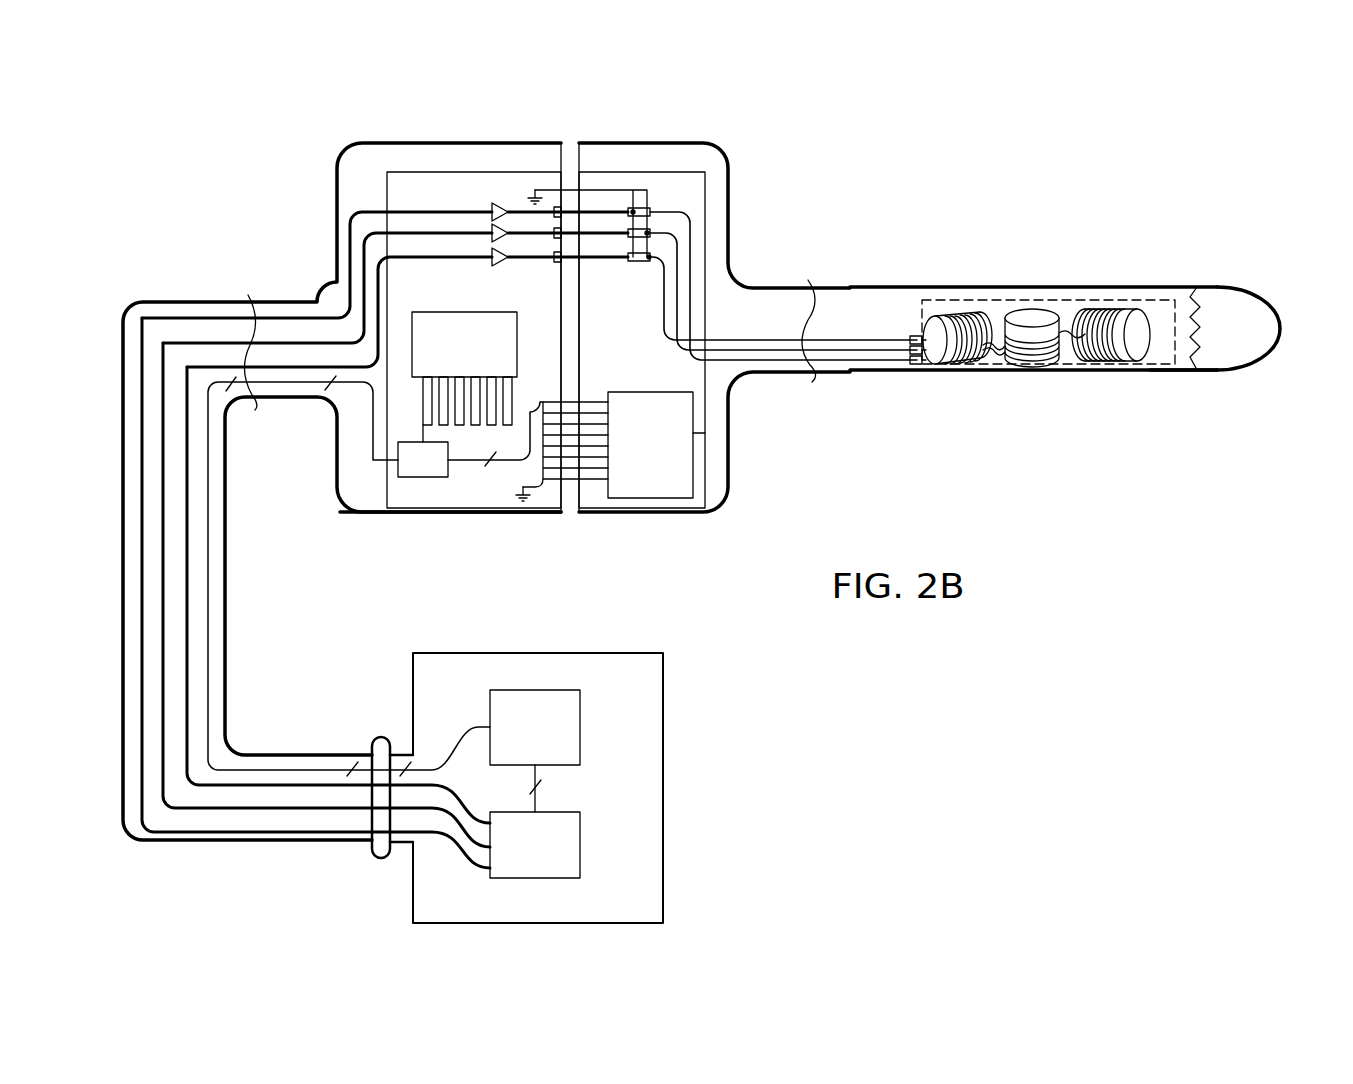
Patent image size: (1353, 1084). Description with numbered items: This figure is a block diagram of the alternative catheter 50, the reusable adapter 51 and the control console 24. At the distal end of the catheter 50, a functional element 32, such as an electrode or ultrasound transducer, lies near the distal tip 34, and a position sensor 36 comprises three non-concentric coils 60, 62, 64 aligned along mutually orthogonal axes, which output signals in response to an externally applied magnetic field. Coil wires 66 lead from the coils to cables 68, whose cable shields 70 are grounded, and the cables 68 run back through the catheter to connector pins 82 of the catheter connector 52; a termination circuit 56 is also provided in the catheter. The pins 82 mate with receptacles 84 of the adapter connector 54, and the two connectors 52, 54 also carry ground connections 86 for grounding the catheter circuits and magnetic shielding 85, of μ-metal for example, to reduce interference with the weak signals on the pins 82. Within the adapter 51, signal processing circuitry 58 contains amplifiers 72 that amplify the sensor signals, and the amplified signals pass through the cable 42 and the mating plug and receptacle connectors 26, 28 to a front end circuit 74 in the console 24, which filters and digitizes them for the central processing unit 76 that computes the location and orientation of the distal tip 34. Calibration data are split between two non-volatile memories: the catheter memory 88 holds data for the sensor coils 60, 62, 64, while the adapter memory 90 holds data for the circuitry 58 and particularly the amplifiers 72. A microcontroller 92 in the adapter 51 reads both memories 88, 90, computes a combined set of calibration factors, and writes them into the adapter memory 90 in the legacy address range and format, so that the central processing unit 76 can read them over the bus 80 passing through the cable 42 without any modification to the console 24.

The control console 24 is at (663, 780).
The connector 26 is at (372, 742).
The connector 28 is at (403, 750).
The functional element 32 is at (1220, 370).
The distal tip 34 is at (1283, 322).
The position sensor 36 is at (1103, 300).
The cable 42 is at (226, 578).
The catheter 50 is at (980, 287).
The adapter 51 is at (213, 184).
The connector 52 is at (730, 487).
The connector 54 is at (407, 513).
The termination circuit 56 is at (655, 172).
The signal processing circuitry 58 is at (412, 172).
The coil 60 is at (1100, 355).
The coil 62 is at (1028, 358).
The coil 64 is at (945, 360).
The coil wires 66 is at (924, 362).
The cables 68 is at (700, 305).
The cable shields 70 is at (688, 205).
The amplifiers 72 is at (490, 257).
The front end circuit 74 is at (580, 830).
The central processing unit 76 is at (580, 710).
The bus 80 is at (373, 435).
The connector pins 82 is at (582, 214).
The receptacles 84 is at (554, 214).
The magnetic shielding 85 is at (584, 146).
The ground connections 86 is at (536, 190).
The catheter memory 88 is at (705, 410).
The adapter memory 90 is at (455, 312).
The microcontroller 92 is at (420, 478).